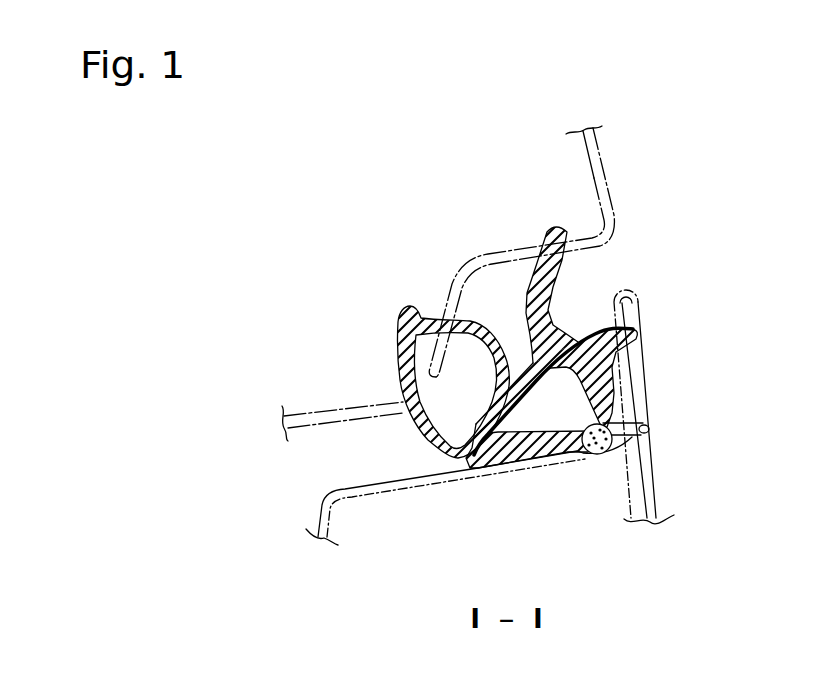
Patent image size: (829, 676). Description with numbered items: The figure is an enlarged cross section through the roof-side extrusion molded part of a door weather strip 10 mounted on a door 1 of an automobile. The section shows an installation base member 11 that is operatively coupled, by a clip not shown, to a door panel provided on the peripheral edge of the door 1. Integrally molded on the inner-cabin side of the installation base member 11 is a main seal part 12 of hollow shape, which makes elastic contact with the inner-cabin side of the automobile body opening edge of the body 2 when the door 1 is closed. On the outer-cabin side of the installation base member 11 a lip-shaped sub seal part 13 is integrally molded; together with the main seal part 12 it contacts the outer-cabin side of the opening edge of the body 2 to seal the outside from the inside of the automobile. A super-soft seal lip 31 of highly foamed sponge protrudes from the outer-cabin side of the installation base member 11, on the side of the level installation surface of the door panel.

The door 1 is at (397, 491).
The body 2 is at (473, 259).
The door weather strip 10 is at (616, 254).
The installation base member 11 is at (533, 445).
The main seal part 12 is at (399, 373).
The sub seal part 13 is at (565, 228).
The super-soft seal lip 31 is at (582, 458).